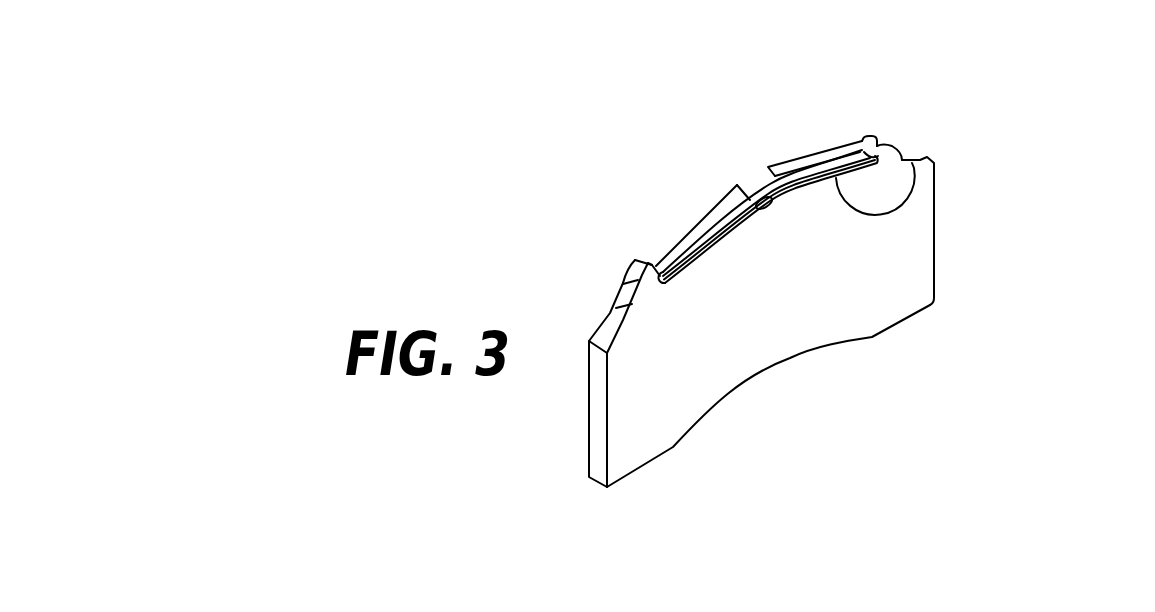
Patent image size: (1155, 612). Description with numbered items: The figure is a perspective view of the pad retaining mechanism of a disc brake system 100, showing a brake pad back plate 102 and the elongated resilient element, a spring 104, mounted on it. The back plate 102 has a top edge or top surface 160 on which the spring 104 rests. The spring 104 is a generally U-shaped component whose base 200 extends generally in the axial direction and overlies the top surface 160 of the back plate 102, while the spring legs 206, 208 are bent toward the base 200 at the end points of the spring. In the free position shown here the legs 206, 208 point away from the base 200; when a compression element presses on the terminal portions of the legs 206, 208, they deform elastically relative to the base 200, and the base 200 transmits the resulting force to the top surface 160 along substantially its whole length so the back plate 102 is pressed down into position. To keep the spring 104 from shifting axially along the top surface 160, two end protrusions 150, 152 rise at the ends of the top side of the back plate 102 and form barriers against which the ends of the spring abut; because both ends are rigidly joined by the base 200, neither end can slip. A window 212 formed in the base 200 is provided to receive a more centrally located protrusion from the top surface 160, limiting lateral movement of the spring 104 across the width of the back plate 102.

The disc brake system 100 is at (1025, 204).
The pad back plate 102 is at (878, 333).
The spring 104 is at (683, 237).
The end protrusion 150 is at (625, 278).
The end protrusion 152 is at (868, 140).
The top surface 160 is at (920, 160).
The base 200 is at (723, 228).
The spring leg 206 is at (727, 207).
The spring leg 208 is at (805, 162).
The window 212 is at (790, 203).